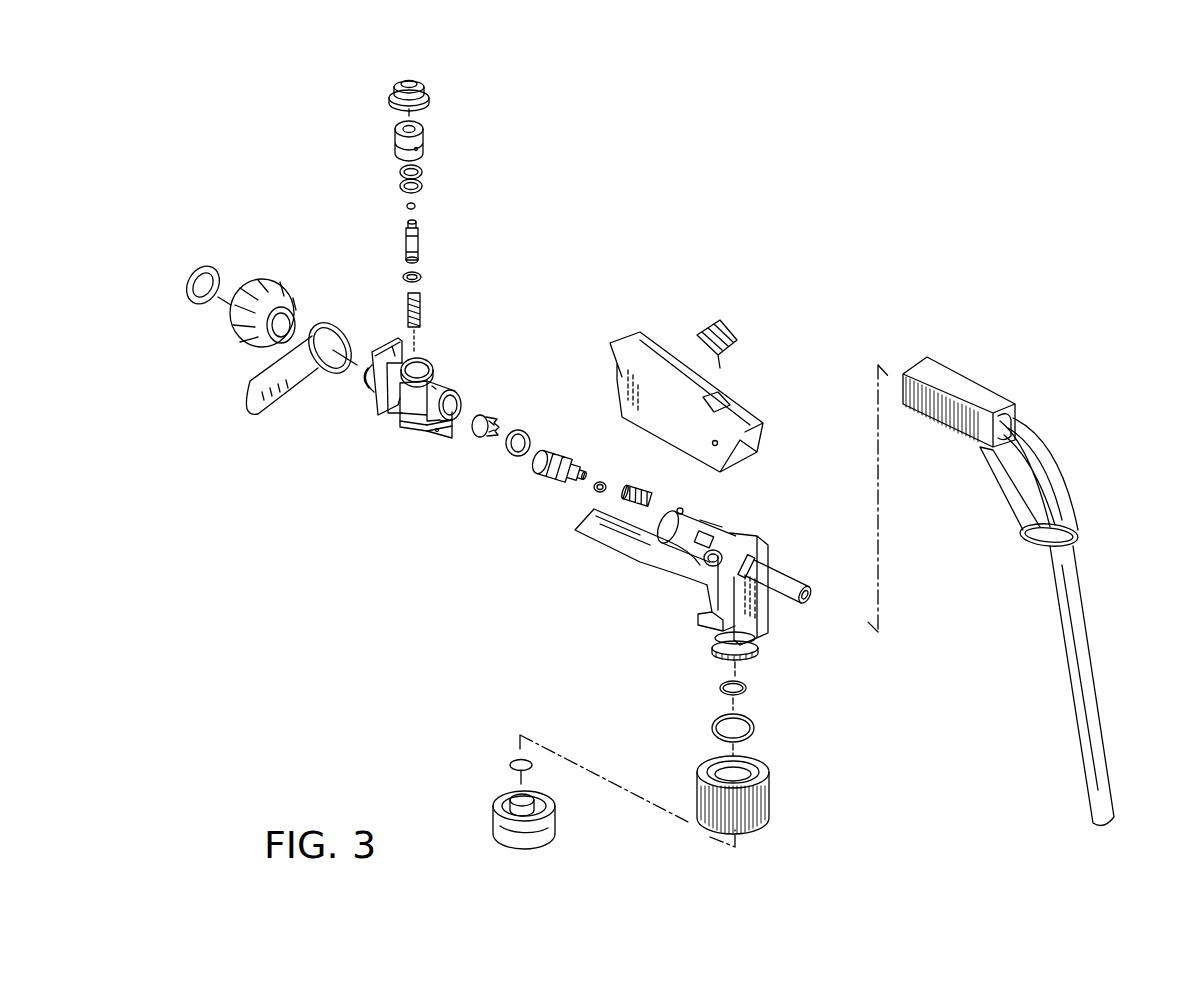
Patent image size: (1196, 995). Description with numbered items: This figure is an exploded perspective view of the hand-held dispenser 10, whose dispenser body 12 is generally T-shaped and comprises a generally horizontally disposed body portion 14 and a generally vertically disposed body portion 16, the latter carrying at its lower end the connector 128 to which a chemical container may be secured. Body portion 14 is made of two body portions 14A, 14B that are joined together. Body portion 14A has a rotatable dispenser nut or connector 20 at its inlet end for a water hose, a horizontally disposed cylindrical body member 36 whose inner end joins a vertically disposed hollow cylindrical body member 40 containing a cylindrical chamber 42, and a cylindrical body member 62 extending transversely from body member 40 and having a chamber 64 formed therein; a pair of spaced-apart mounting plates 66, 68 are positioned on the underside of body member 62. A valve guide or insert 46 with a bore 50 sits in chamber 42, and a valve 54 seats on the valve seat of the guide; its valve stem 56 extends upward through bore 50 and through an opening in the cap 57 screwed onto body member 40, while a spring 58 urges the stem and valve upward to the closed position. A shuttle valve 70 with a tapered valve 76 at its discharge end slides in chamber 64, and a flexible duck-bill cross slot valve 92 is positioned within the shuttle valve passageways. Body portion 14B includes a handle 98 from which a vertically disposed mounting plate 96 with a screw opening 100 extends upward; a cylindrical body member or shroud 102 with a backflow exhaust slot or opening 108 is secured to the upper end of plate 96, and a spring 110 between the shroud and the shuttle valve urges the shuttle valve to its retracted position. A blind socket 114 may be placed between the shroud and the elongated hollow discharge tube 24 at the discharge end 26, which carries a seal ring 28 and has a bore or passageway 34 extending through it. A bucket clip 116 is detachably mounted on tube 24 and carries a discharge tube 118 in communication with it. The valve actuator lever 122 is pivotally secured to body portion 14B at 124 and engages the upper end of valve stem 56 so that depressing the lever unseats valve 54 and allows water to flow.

The hand-held dispenser 10 is at (622, 282).
The dispenser body 12 is at (633, 578).
The horizontally disposed body portion 14 is at (742, 509).
The body portion 14A is at (381, 452).
The body portion 14B is at (652, 593).
The vertically disposed body portion 16 is at (681, 643).
The rotatable dispenser nut or connector 20 is at (280, 287).
The discharge tube 24 is at (812, 578).
The discharge end 26 is at (770, 632).
The seal ring 28 is at (795, 572).
The bore or passageway 34 is at (817, 600).
The cylindrical body member 36 is at (372, 388).
The hollow cylindrical body member 40 is at (445, 422).
The cylindrical chamber or passageway 42 is at (420, 362).
The valve guide or insert 46 is at (428, 142).
The bore 50 is at (456, 153).
The valve 54 is at (422, 263).
The valve stem 56 is at (422, 245).
The cap 57 is at (424, 92).
The spring 58 is at (421, 312).
The cylindrical body member 62 is at (447, 382).
The chamber 64 is at (462, 392).
The mounting plate 66 is at (427, 427).
The mounting plate 68 is at (453, 427).
The shuttle valve 70 is at (567, 434).
The tapered valve 76 is at (573, 482).
The flexible duck-bill cross slot valve 92 is at (481, 456).
The mounting plate 96 is at (693, 557).
The handle 98 is at (603, 543).
The screw opening 100 is at (447, 427).
The cylindrical body member or shroud 102 is at (709, 498).
The backflow exhaust slot or opening 108 is at (718, 520).
The spring 110 is at (627, 496).
The blind socket 114 is at (770, 562).
The bucket clip 116 is at (970, 380).
The discharge tube 118 is at (1078, 637).
The valve actuator lever 122 is at (718, 363).
The pivot 124 is at (735, 410).
The connector 128 is at (772, 790).